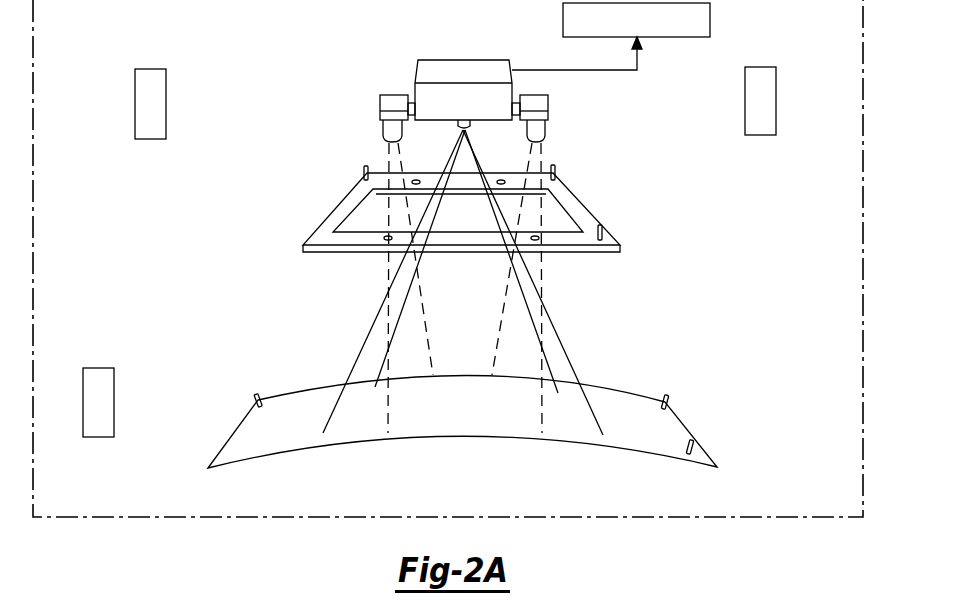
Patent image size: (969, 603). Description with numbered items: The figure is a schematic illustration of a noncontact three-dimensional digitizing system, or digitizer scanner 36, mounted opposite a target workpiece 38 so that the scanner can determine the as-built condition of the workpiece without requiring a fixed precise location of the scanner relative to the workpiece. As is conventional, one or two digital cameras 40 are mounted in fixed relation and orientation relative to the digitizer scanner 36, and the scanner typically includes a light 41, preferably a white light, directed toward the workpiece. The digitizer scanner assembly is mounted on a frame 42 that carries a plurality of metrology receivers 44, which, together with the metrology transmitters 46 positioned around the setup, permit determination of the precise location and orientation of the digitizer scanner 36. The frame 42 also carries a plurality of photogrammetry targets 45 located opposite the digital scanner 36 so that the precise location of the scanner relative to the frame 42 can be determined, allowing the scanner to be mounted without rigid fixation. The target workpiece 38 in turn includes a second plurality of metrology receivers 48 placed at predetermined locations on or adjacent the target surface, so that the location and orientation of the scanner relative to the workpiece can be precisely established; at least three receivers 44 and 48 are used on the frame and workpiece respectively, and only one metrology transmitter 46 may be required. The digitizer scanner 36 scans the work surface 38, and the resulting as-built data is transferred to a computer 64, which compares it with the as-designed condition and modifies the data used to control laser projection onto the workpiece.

The digitizer scanner 36 is at (470, 62).
The workpiece 38 is at (462, 388).
The digital cameras 40 is at (380, 104).
The light 41 is at (467, 130).
The frame 42 is at (464, 212).
The metrology receivers 44 is at (364, 172).
The photogrammetry targets 45 is at (461, 210).
The metrology transmitters 46 is at (102, 380).
The second plurality of metrology receivers 48 is at (264, 398).
The computer 64 is at (712, 16).